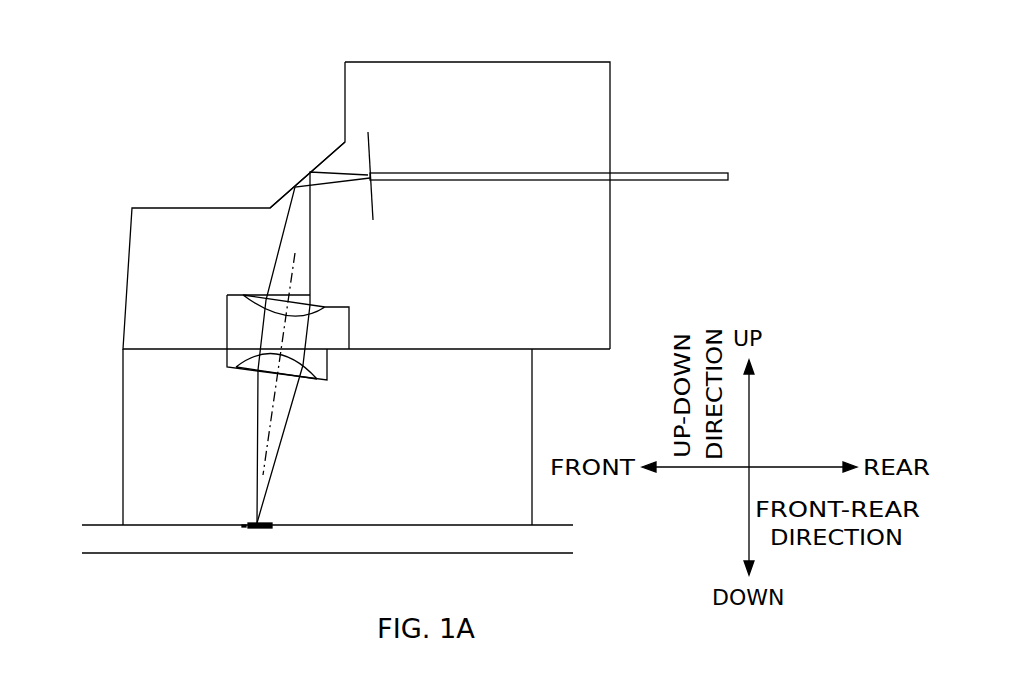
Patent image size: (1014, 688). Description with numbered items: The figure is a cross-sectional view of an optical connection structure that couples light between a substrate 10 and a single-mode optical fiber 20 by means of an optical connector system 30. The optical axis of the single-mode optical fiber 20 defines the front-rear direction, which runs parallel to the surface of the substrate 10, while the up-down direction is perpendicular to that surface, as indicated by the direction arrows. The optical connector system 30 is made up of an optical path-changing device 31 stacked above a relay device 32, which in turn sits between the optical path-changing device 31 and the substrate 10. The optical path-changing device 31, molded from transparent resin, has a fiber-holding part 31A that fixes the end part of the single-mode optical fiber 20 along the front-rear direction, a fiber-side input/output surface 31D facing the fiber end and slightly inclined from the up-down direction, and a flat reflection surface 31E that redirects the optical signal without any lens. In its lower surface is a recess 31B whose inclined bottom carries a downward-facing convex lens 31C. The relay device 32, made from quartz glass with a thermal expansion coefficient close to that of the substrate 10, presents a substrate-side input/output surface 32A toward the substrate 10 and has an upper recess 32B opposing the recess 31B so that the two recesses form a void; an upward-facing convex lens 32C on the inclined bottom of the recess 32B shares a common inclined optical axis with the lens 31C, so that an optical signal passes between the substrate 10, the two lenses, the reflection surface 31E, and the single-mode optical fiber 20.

The substrate 10 is at (165, 545).
The single-mode optical fiber 20 is at (682, 172).
The optical connector system 30 is at (309, 268).
The optical path-changing device 31 is at (334, 178).
The fiber-holding part 31A is at (419, 165).
The recess 31B is at (336, 332).
The lens 31C is at (318, 308).
The fiber-side input/output surface 31D is at (371, 153).
The reflection surface 31E is at (278, 200).
The relay device 32 is at (295, 438).
The substrate-side input/output surface 32A is at (278, 522).
The recess 32B is at (325, 367).
The lens 32C is at (312, 380).